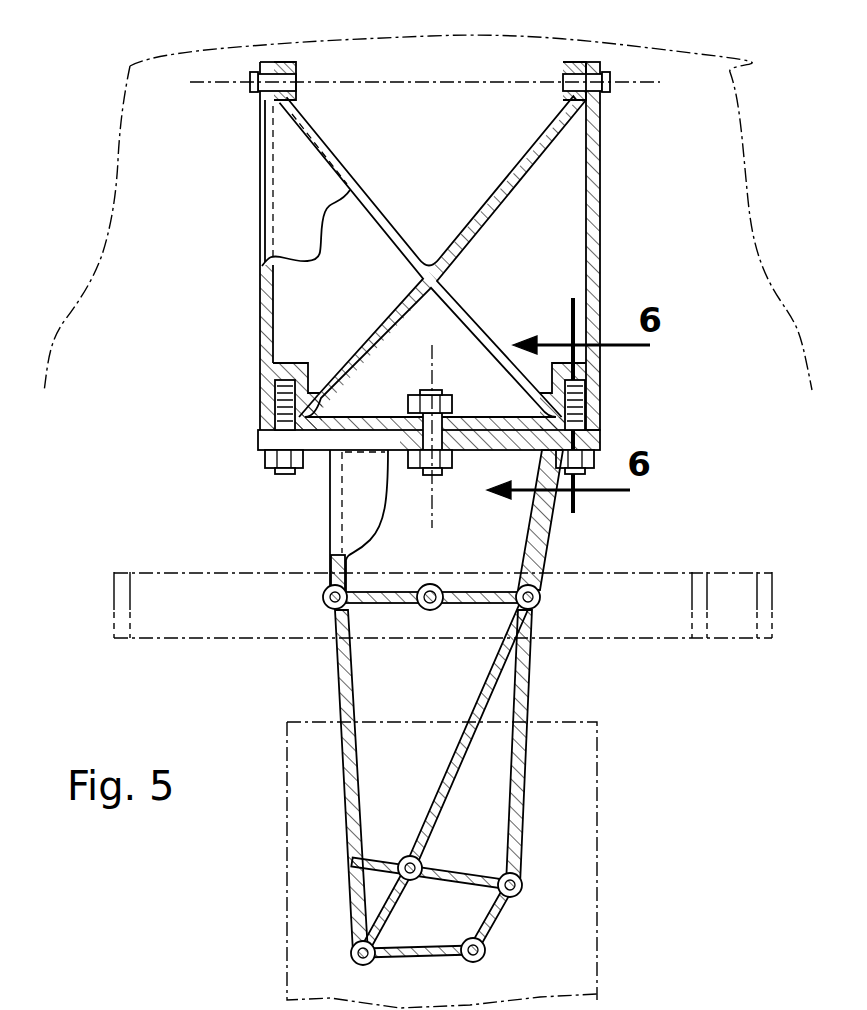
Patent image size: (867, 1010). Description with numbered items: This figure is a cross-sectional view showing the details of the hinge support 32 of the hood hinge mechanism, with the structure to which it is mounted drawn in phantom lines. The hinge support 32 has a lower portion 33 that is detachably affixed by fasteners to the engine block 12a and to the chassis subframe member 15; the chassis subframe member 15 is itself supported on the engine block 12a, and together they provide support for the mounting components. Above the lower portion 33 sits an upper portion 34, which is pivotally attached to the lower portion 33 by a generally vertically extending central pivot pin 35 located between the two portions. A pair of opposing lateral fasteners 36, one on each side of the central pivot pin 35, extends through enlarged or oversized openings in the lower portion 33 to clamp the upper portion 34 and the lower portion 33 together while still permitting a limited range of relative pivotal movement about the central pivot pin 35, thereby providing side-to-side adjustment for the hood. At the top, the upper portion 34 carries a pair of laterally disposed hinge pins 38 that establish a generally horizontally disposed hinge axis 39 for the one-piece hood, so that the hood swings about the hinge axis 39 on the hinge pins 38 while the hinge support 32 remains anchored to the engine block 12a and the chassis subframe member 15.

The engine block 12a is at (597, 848).
The chassis subframe member 15 is at (745, 640).
The hinge support 32 is at (200, 402).
The lower portion 33 is at (537, 670).
The upper portion 34 is at (603, 190).
The central pivot pin 35 is at (438, 480).
The lateral fasteners 36 is at (290, 462).
The hinge pins 38 is at (248, 82).
The hinge axis 39 is at (478, 82).